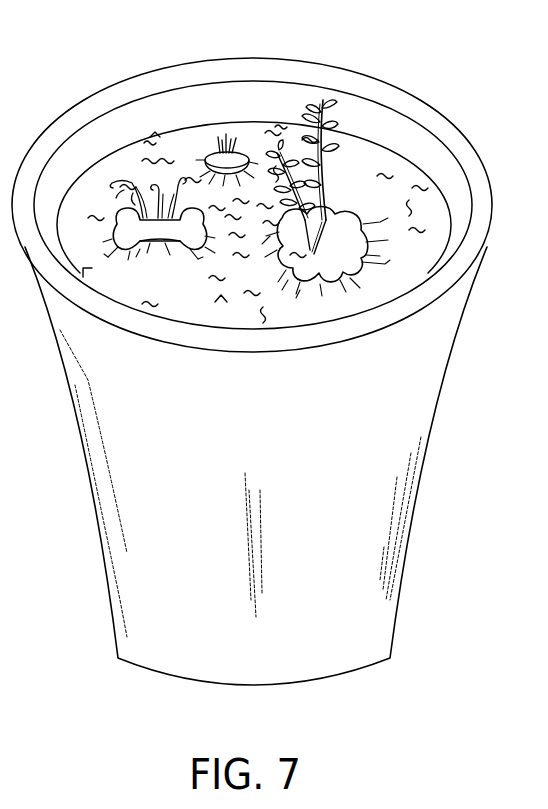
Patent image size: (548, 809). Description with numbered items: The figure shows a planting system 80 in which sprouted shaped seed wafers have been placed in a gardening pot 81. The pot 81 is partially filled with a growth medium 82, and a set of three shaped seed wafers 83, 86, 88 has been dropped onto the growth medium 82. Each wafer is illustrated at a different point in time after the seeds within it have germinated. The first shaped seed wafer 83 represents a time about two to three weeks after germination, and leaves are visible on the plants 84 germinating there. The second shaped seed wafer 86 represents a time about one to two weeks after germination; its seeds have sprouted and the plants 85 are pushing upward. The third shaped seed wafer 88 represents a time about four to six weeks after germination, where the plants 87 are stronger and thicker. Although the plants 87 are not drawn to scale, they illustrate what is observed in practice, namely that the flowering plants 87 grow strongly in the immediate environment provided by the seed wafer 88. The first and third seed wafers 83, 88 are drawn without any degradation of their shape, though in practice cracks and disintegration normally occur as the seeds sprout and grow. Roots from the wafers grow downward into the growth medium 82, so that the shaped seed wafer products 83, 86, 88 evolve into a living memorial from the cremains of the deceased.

The planting system 80 is at (457, 58).
The pot 81 is at (242, 432).
The growth medium 82 is at (170, 311).
The first shaped seed wafer 83 is at (118, 213).
The plants 84 is at (128, 193).
The plants 85 is at (217, 145).
The second shaped seed wafer 86 is at (246, 147).
The plants 87 is at (292, 150).
The third shaped seed wafer 88 is at (355, 167).